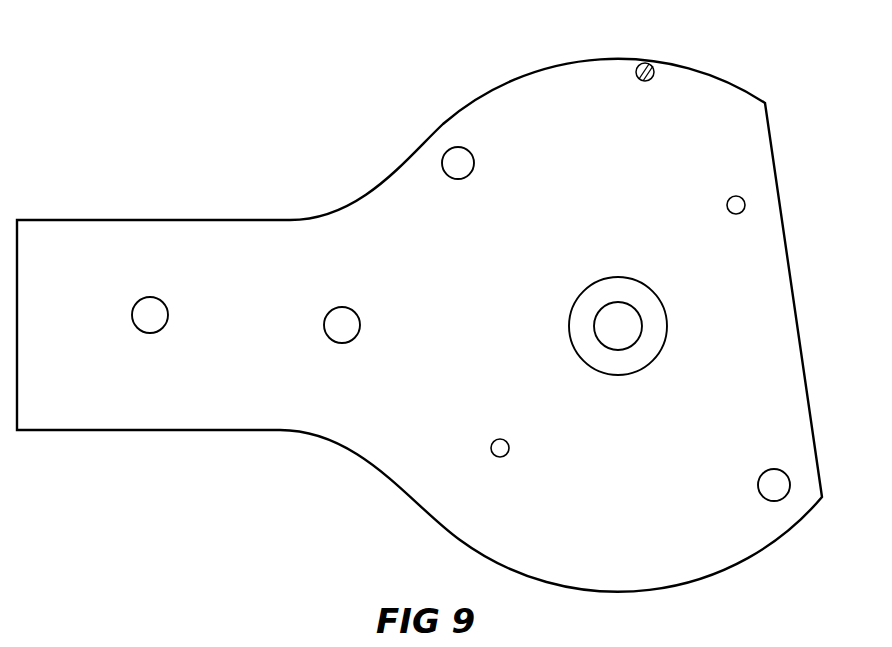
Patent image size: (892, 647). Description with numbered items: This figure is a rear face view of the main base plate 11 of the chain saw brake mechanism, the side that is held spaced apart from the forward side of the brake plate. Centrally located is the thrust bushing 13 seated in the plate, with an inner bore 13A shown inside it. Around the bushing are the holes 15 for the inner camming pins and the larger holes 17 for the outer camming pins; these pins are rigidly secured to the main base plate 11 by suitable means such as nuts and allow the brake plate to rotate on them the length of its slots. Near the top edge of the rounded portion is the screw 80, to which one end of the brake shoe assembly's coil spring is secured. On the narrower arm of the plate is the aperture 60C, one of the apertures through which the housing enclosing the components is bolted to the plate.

The main base plate 11 is at (243, 221).
The thrust bushing 13 is at (668, 320).
The inner bore 13A is at (638, 308).
The holes for the inner pins 15 is at (729, 203).
The holes for the outer pins 17 is at (468, 166).
The aperture 60C is at (152, 334).
The screw 80 is at (650, 62).